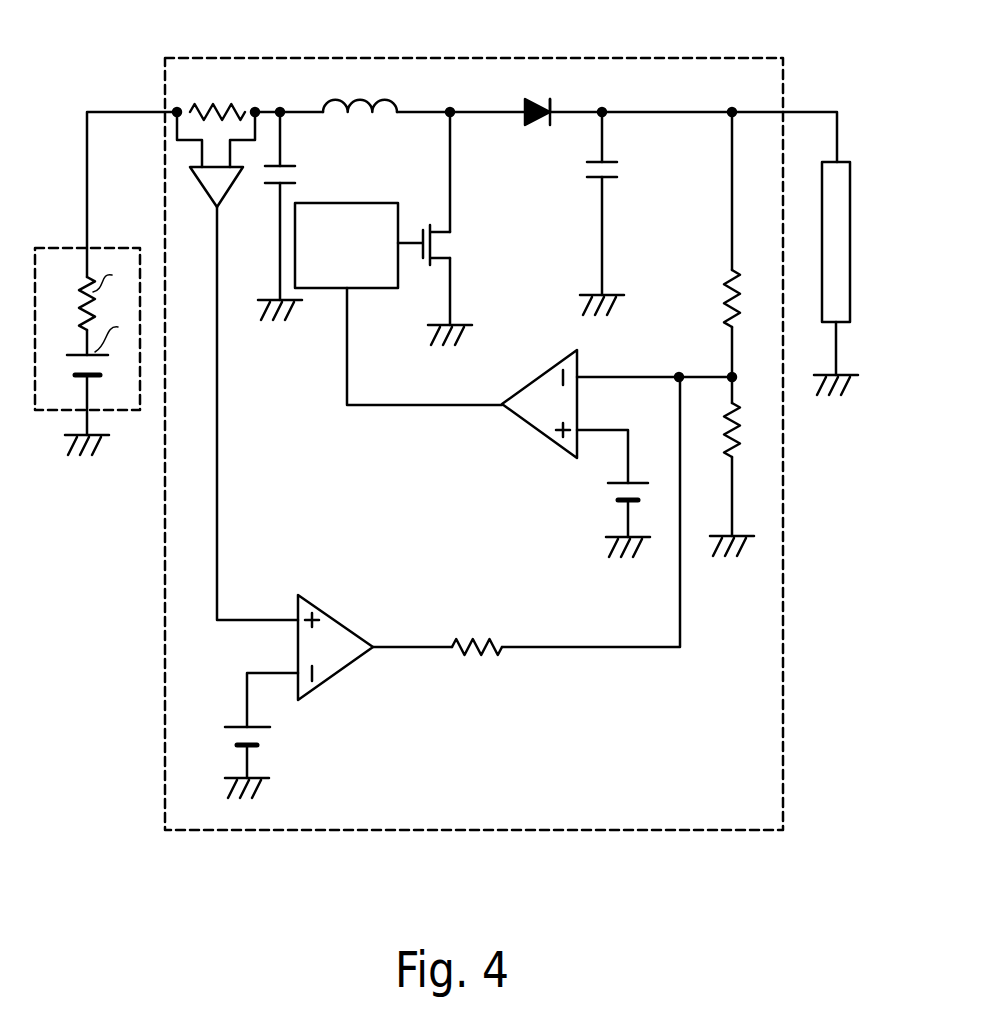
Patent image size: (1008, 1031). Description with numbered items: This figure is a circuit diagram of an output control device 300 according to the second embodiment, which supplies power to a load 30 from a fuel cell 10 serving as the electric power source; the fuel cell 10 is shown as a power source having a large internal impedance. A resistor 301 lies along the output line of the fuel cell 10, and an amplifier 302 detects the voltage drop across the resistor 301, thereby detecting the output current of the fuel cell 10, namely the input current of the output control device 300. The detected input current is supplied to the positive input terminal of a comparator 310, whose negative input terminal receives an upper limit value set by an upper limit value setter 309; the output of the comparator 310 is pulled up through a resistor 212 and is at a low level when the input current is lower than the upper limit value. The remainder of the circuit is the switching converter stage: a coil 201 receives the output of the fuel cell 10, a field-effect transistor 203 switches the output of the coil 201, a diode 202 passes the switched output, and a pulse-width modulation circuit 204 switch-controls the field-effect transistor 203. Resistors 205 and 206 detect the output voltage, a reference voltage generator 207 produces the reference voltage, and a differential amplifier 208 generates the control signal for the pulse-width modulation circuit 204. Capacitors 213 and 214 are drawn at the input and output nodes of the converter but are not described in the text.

The output control device 300 is at (650, 55).
The fuel cell 10 is at (100, 246).
The resistor 301 is at (236, 102).
The amplifier 302 is at (210, 196).
The coil 201 is at (370, 101).
The diode 202 is at (540, 100).
The field-effect transistor 203 is at (437, 233).
The pulse-width modulation circuit 204 is at (322, 204).
The resistor 205 is at (730, 284).
The resistor 206 is at (738, 416).
The reference voltage generator 207 is at (632, 480).
The differential amplifier 208 is at (550, 365).
The resistor 212 is at (485, 642).
The input capacitor 213 is at (296, 165).
The output capacitor 214 is at (612, 160).
The load 30 is at (838, 160).
The upper limit value setter 309 is at (252, 722).
The comparator 310 is at (320, 605).